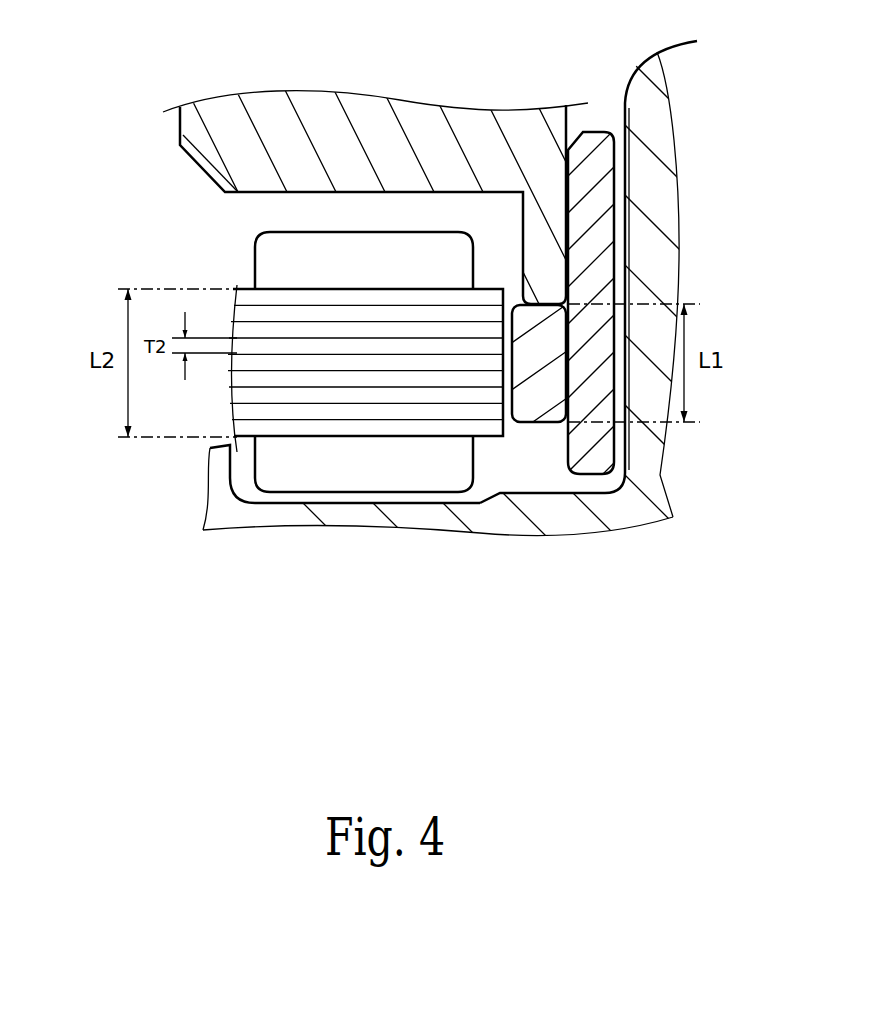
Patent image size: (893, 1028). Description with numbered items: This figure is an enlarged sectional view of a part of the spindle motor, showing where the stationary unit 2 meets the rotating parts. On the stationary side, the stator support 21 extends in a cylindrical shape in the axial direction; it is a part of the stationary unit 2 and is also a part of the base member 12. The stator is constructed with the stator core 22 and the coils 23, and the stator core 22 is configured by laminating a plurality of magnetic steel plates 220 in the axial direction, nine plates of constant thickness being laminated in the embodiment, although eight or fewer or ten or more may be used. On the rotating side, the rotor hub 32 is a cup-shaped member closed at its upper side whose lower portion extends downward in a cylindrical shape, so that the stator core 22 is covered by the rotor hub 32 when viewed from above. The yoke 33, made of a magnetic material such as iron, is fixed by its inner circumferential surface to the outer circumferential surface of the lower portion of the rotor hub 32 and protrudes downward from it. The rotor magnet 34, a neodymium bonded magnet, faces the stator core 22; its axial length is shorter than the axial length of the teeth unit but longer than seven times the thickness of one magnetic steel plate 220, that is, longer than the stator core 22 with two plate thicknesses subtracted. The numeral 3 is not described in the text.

The stationary unit 2 is at (240, 247).
The stator 3 is at (440, 98).
The base member 12 is at (637, 512).
The stator support 21 is at (217, 463).
The stator core 22 is at (370, 452).
The coil 23 is at (440, 478).
The rotor hub 32 is at (320, 97).
The yoke 33 is at (603, 140).
The rotor magnet 34 is at (537, 400).
The magnetic steel plate 220 is at (492, 296).